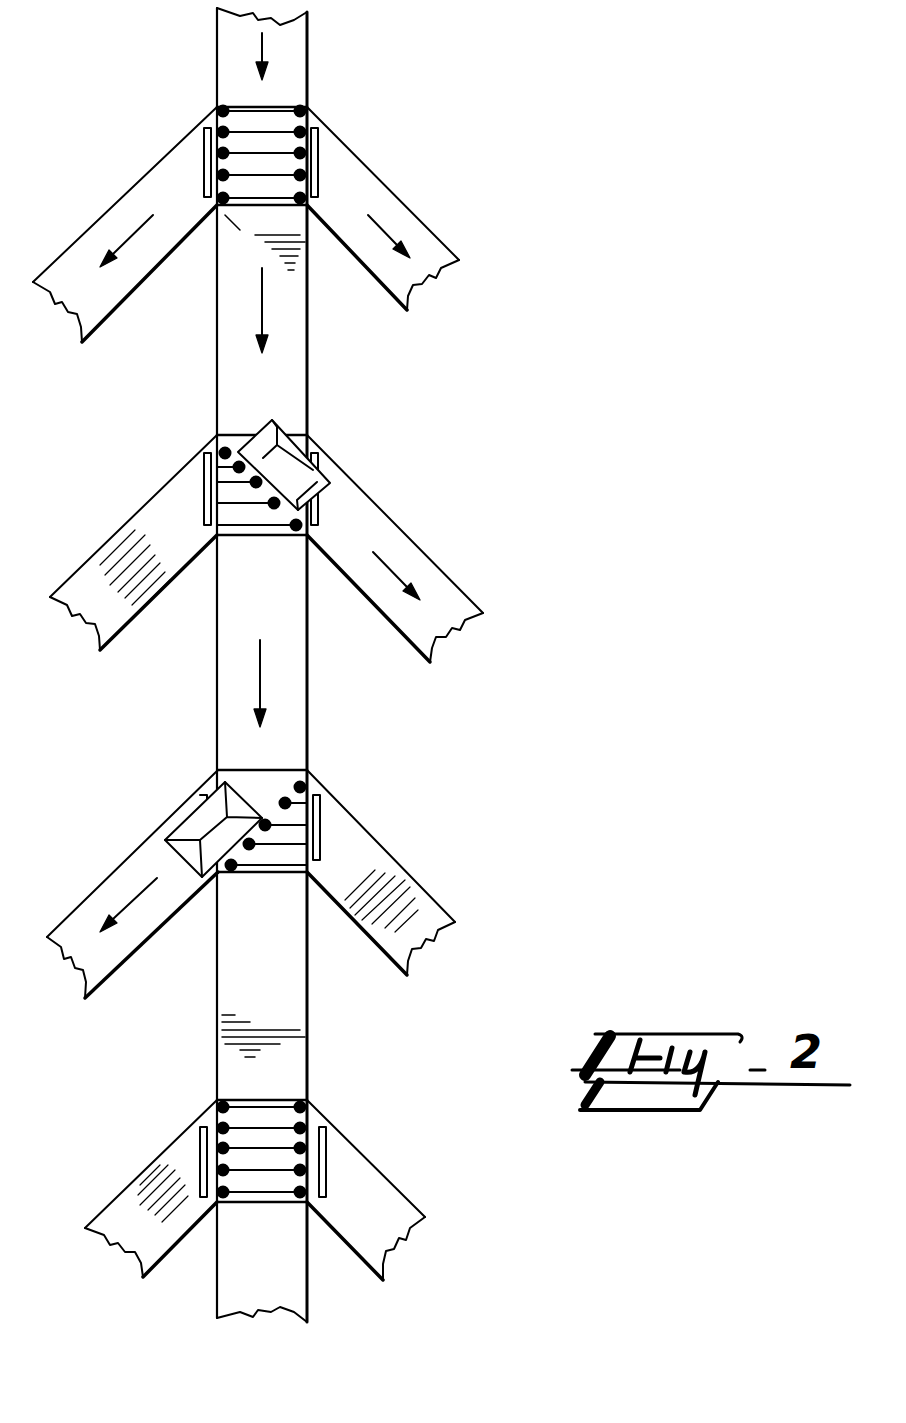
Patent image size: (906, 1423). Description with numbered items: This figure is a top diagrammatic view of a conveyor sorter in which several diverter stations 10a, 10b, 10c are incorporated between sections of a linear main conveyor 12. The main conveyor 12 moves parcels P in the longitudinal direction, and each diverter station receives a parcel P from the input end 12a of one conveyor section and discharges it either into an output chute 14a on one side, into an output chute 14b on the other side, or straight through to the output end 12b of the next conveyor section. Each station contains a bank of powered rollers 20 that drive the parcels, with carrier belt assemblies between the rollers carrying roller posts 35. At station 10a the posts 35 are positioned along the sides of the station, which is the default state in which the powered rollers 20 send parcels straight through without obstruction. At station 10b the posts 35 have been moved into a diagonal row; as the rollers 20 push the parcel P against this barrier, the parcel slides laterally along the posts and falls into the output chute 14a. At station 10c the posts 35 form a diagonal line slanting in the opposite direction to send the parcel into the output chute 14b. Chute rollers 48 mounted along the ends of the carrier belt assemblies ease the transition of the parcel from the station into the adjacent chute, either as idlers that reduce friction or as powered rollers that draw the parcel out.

The main conveyor 12 is at (243, 32).
The input end of conveyor section 12a is at (290, 397).
The output end of conveyor section 12b is at (230, 225).
The diverter station 10a is at (283, 83).
The diverter station 10b is at (178, 438).
The diverter station 10c is at (181, 759).
The powered rollers 20 is at (243, 107).
The roller posts 35 is at (300, 132).
The chute rollers 48 is at (315, 160).
The output chute 14a is at (400, 215).
The output chute 14b is at (117, 290).
The parcel P is at (302, 453).